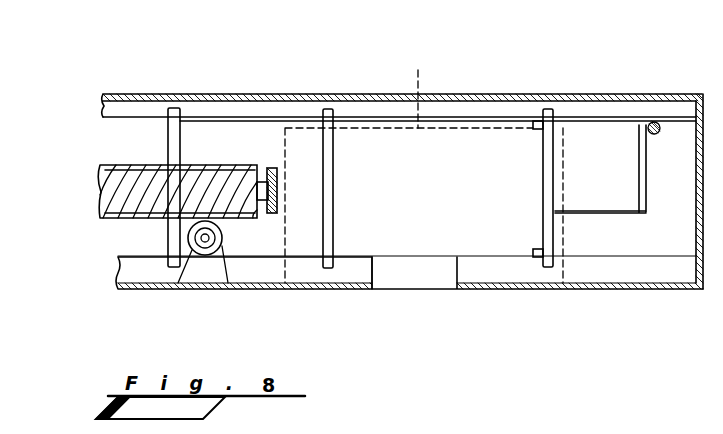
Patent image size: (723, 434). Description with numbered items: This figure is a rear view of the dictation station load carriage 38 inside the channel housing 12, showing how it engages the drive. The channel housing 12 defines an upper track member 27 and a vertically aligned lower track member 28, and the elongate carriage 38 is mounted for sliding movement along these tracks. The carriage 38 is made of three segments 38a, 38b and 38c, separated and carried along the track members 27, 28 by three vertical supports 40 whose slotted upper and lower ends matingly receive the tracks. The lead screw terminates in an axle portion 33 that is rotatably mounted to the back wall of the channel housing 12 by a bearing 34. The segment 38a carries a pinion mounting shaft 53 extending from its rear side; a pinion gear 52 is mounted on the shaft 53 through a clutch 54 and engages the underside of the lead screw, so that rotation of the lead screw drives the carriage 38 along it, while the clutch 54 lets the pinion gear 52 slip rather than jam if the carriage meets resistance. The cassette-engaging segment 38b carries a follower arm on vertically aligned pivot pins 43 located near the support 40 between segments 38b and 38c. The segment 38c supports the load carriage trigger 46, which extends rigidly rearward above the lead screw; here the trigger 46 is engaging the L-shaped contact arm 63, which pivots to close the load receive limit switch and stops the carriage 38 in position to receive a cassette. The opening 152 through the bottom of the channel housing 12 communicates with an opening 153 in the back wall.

The channel housing 12 is at (601, 94).
The upper track member 27 is at (642, 110).
The lower track member 28 is at (605, 272).
The axle portion 33 is at (268, 213).
The bearing 34 is at (271, 168).
The dictation station load carriage 38 is at (470, 152).
The carriage segment 38a is at (215, 142).
The carriage segment 38b is at (385, 170).
The carriage segment 38c is at (615, 150).
The vertical support 40 is at (182, 140).
The pivot pin 43 is at (537, 121).
The load carriage trigger 46 is at (652, 118).
The pinion gear 52 is at (226, 252).
The pinion mounting shaft 53 is at (200, 246).
The clutch 54 is at (206, 248).
The contact arm 63 is at (660, 132).
The opening 152 is at (374, 270).
The opening 153 is at (425, 67).